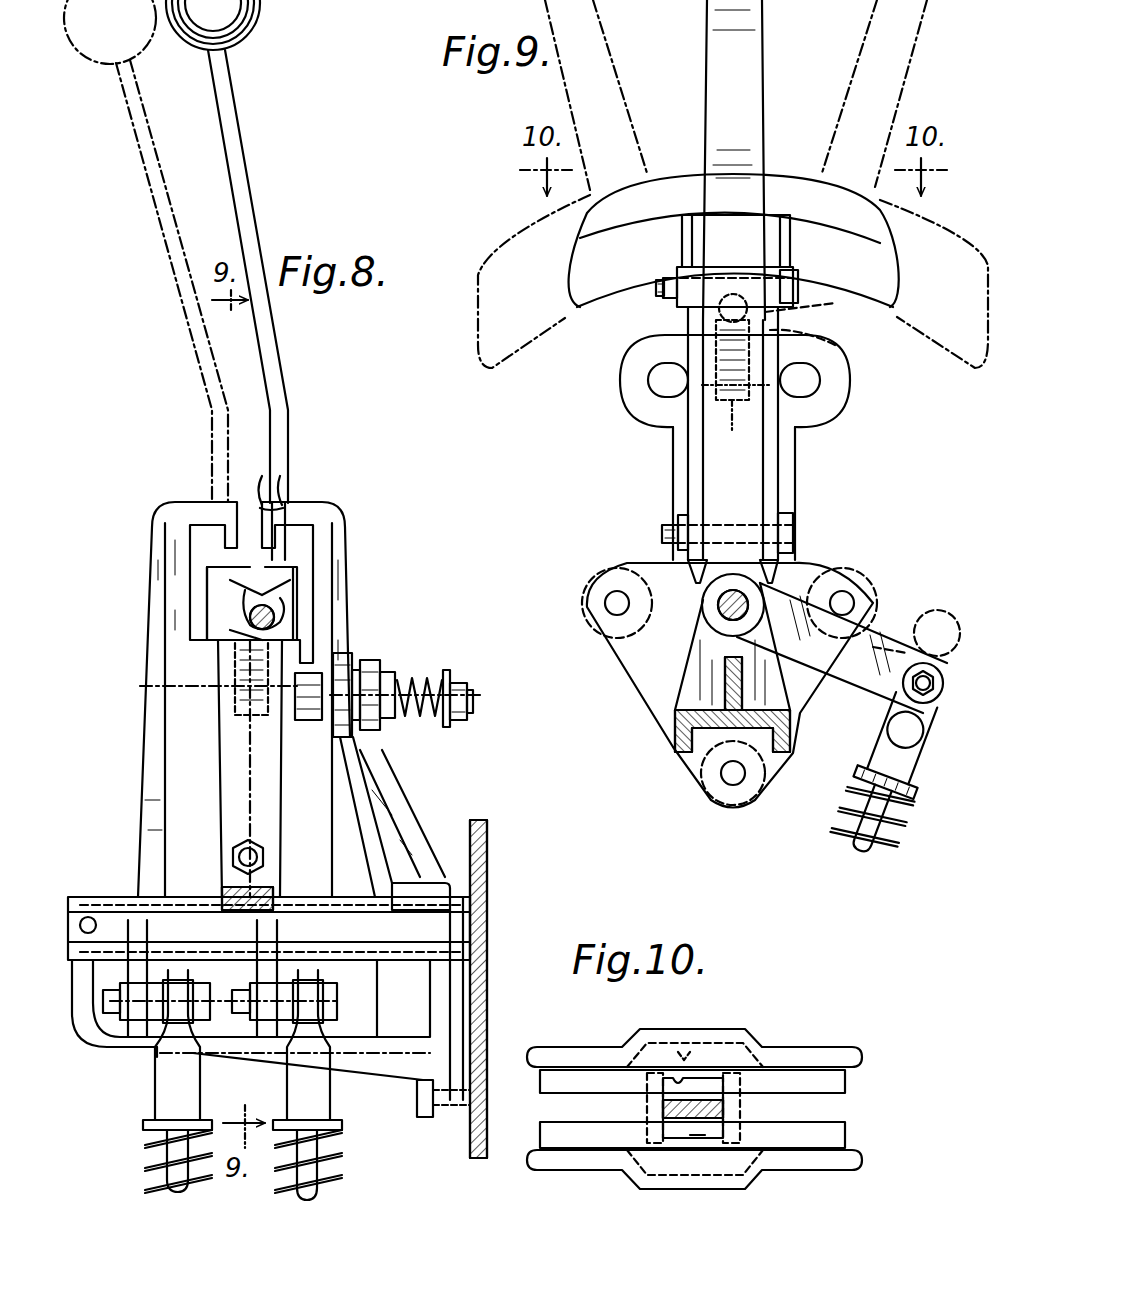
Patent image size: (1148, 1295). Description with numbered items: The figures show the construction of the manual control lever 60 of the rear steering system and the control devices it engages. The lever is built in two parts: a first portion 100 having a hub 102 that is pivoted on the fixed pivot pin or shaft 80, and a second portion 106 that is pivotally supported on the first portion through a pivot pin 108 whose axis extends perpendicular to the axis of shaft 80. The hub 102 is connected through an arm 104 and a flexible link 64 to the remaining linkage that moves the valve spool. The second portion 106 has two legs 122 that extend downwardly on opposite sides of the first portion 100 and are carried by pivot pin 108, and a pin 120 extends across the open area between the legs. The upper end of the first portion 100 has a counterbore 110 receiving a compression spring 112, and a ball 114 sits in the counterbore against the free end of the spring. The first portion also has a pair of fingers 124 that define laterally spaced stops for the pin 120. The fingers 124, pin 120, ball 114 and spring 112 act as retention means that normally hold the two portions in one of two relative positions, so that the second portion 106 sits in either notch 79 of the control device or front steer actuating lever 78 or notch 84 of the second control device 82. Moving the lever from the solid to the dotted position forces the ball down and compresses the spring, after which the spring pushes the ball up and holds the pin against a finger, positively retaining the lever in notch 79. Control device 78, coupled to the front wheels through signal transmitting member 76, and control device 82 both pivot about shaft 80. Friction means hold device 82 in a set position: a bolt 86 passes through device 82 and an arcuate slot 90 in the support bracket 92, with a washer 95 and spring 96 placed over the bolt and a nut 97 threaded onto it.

In FIG. 8, the manual control lever 60 is at (272, 78).
In FIG. 8, the flexible link 64 is at (342, 1187).
In FIG. 9, the flexible link 64 is at (840, 802).
In FIG. 8, the signal transmitting member 76 is at (203, 1192).
In FIG. 8, the control device 78 is at (152, 530).
In FIG. 10, the control device 78 is at (582, 1167).
In FIG. 8, the notch 79 is at (215, 477).
In FIG. 10, the notch 79 is at (700, 1138).
In FIG. 8, the fixed pivot pin 80 is at (118, 895).
In FIG. 9, the fixed pivot pin 80 is at (720, 610).
In FIG. 8, the second control device 82 is at (345, 538).
In FIG. 9, the second control device 82 is at (878, 238).
In FIG. 10, the second control device 82 is at (775, 1058).
In FIG. 8, the notch 84 is at (288, 478).
In FIG. 10, the notch 84 is at (676, 1080).
In FIG. 8, the bolt 86 is at (470, 692).
In FIG. 9, the bolt 86 is at (736, 391).
In FIG. 9, the arcuate slot 90 is at (660, 385).
In FIG. 8, the support bracket 92 is at (108, 1032).
In FIG. 9, the support bracket 92 is at (676, 735).
In FIG. 8, the washer 95 is at (398, 682).
In FIG. 8, the spring 96 is at (428, 718).
In FIG. 8, the nut 97 is at (463, 707).
In FIG. 8, the first portion 100 is at (225, 897).
In FIG. 9, the first portion 100 is at (745, 505).
In FIG. 8, the hub 102 is at (217, 931).
In FIG. 8, the arm 104 is at (268, 1010).
In FIG. 9, the arm 104 is at (923, 660).
In FIG. 8, the second portion 106 is at (260, 220).
In FIG. 9, the second portion 106 is at (762, 80).
In FIG. 10, the second portion 106 is at (700, 1100).
In FIG. 8, the pivot pin 108 is at (248, 846).
In FIG. 9, the pivot pin 108 is at (662, 534).
In FIG. 8, the counterbore 110 is at (140, 686).
In FIG. 9, the counterbore 110 is at (840, 345).
In FIG. 8, the compression spring 112 is at (240, 668).
In FIG. 8, the ball 114 is at (262, 605).
In FIG. 9, the ball 114 is at (815, 314).
In FIG. 8, the pin 120 is at (270, 606).
In FIG. 9, the pin 120 is at (660, 290).
In FIG. 8, the legs 122 is at (240, 745).
In FIG. 9, the legs 122 is at (688, 475).
In FIG. 10, the legs 122 is at (648, 1110).
In FIG. 8, the fingers 124 is at (245, 612).
In FIG. 9, the fingers 124 is at (718, 285).